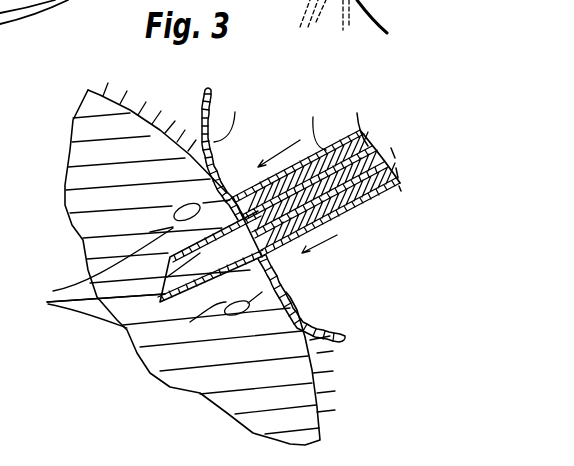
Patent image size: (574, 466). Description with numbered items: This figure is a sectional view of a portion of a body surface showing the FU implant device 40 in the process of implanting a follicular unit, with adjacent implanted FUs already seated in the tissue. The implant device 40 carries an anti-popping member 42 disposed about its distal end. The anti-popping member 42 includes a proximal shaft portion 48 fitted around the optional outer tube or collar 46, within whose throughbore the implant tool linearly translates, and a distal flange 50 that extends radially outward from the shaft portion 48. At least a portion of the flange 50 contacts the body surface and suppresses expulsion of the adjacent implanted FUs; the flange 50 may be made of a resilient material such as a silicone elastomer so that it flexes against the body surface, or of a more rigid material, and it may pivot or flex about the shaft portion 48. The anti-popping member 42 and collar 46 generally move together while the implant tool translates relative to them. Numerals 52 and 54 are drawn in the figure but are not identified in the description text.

The FU implant device 40 is at (353, 262).
The anti-popping member 42 is at (312, 310).
The collar 46 is at (372, 188).
The proximal shaft portion 48 is at (316, 163).
The distal flange 50 is at (227, 141).
The suturing needle 52 is at (387, 33).
The suture 54 is at (343, 30).
The follicular units FUs is at (95, 278).